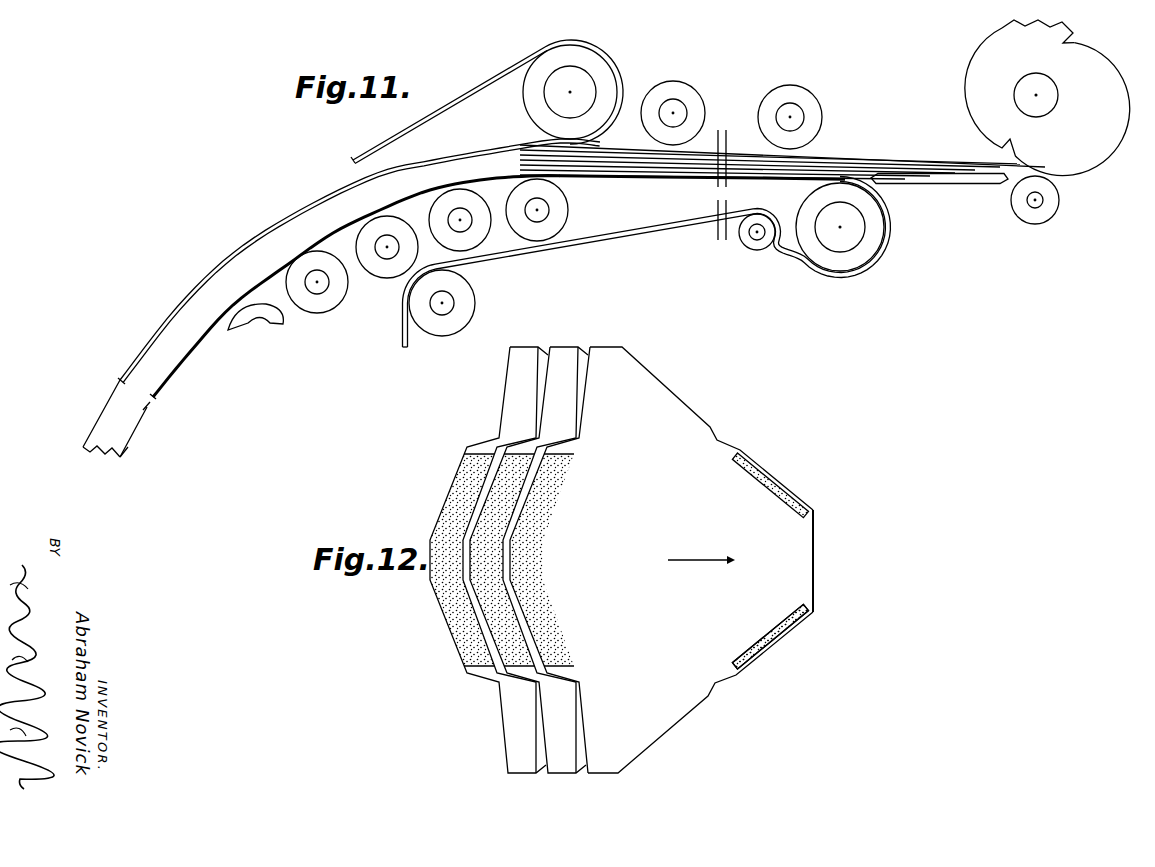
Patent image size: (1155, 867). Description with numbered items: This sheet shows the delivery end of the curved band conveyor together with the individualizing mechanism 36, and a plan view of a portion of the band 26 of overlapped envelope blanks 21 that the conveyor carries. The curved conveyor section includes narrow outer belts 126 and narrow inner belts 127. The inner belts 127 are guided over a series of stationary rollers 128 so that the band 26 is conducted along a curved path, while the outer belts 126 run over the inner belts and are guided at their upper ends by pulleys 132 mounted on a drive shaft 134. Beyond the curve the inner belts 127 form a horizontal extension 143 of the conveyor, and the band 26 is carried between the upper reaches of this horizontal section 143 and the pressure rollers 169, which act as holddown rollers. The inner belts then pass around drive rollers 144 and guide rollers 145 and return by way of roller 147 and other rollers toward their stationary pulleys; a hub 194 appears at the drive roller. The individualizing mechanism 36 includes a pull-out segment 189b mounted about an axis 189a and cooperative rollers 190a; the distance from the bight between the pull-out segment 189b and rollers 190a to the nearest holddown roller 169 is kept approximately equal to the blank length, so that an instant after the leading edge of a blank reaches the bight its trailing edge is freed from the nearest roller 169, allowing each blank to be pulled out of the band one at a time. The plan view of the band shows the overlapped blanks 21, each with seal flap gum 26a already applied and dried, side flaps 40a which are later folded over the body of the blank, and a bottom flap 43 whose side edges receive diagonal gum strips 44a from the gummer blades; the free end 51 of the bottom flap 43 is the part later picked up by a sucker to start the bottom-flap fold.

In FIG. 11, the pulleys 132 is at (583, 62).
In FIG. 11, the drive shaft 134 is at (553, 98).
In FIG. 11, the outer belts 126 is at (380, 176).
In FIG. 11, the inner belts 127 is at (188, 363).
In FIG. 11, the stationary rollers 128 is at (380, 268).
In FIG. 11, the roller 147 is at (443, 328).
In FIG. 11, the horizontal extension 143 is at (659, 190).
In FIG. 11, the guide rollers 145 is at (755, 252).
In FIG. 11, the drive rollers 144 is at (847, 271).
In FIG. 11, the roller hub 194 is at (847, 237).
In FIG. 11, the pressure rollers 169 is at (765, 108).
In FIG. 11, the band 26 is at (741, 138).
In FIG. 12, the band 26 is at (476, 725).
In FIG. 11, the envelope blanks 21 is at (929, 170).
In FIG. 12, the envelope blanks 21 is at (615, 345).
In FIG. 11, the individualizing mechanism 36 is at (1024, 98).
In FIG. 11, the wheel shaft 189a is at (1040, 97).
In FIG. 11, the pull-out segment 189b is at (960, 107).
In FIG. 11, the cooperative rollers 190a is at (1035, 222).
In FIG. 12, the side flaps 40a is at (687, 402).
In FIG. 12, the gum strips 44a is at (782, 490).
In FIG. 12, the free end 51 is at (807, 560).
In FIG. 12, the bottom flap 43 is at (750, 618).
In FIG. 12, the gum 26a is at (500, 627).